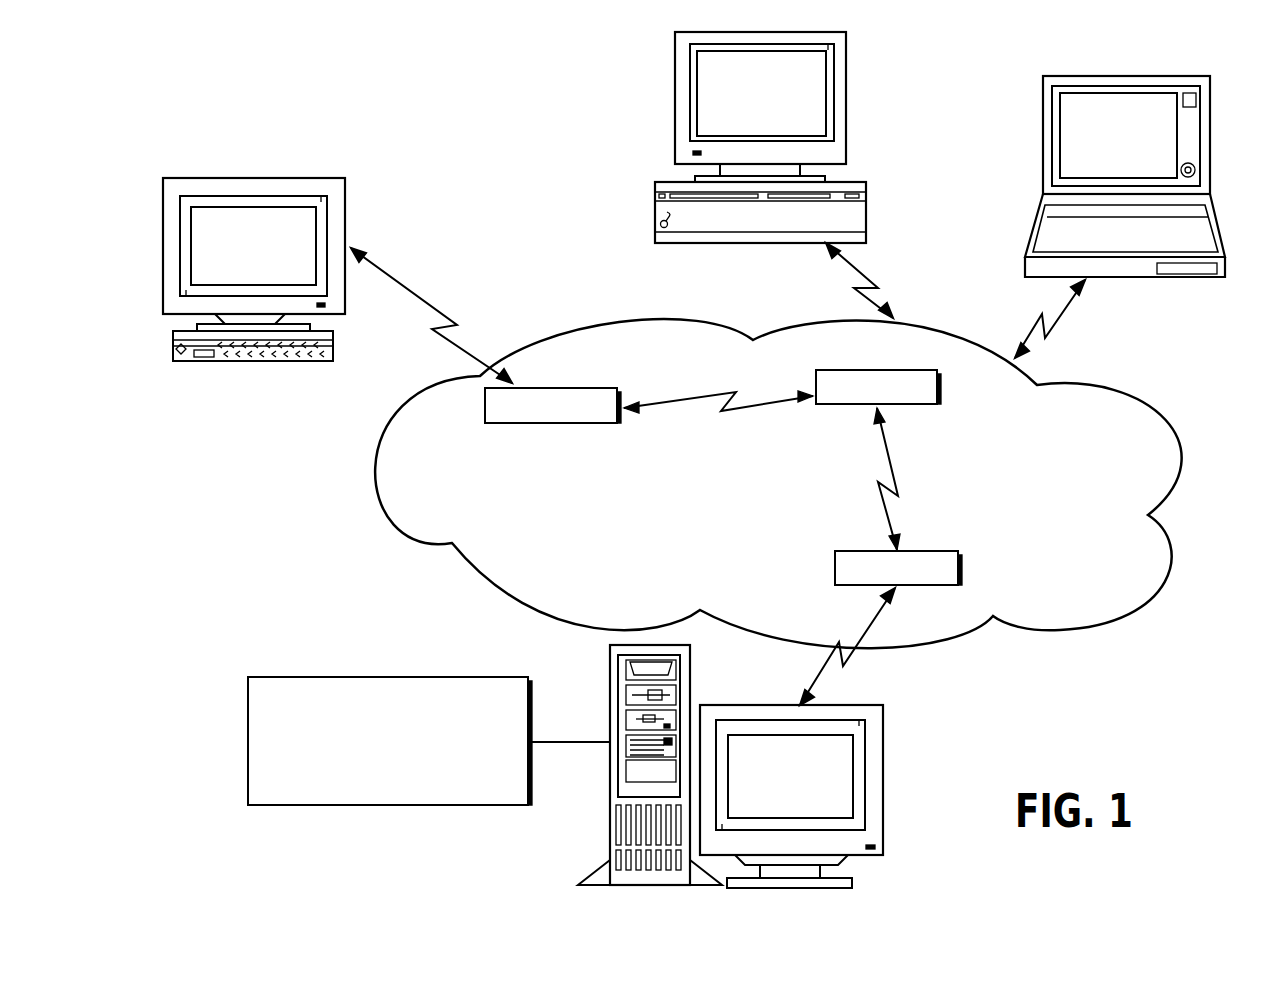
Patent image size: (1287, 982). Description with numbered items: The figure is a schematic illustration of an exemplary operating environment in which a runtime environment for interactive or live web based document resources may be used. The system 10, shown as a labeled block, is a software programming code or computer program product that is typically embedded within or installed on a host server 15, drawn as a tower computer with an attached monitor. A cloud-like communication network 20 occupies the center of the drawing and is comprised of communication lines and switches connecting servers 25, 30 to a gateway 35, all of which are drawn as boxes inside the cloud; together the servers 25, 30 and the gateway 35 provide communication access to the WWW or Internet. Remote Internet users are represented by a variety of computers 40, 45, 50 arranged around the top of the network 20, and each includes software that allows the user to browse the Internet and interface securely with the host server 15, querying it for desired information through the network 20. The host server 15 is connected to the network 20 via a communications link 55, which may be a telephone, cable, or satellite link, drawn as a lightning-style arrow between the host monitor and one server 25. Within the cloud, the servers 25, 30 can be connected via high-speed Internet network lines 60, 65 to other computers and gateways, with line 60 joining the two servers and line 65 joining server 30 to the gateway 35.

The system 10 is at (248, 718).
The host server 15 is at (610, 690).
The communication network 20 is at (620, 315).
The server 25 is at (878, 551).
The server 30 is at (893, 370).
The gateway 35 is at (553, 425).
The computer 40 is at (313, 178).
The computer 45 is at (848, 125).
The computer 50 is at (1218, 228).
The communications link 55 is at (812, 680).
The high-speed Internet network line 60 is at (890, 510).
The high-speed Internet network line 65 is at (709, 398).